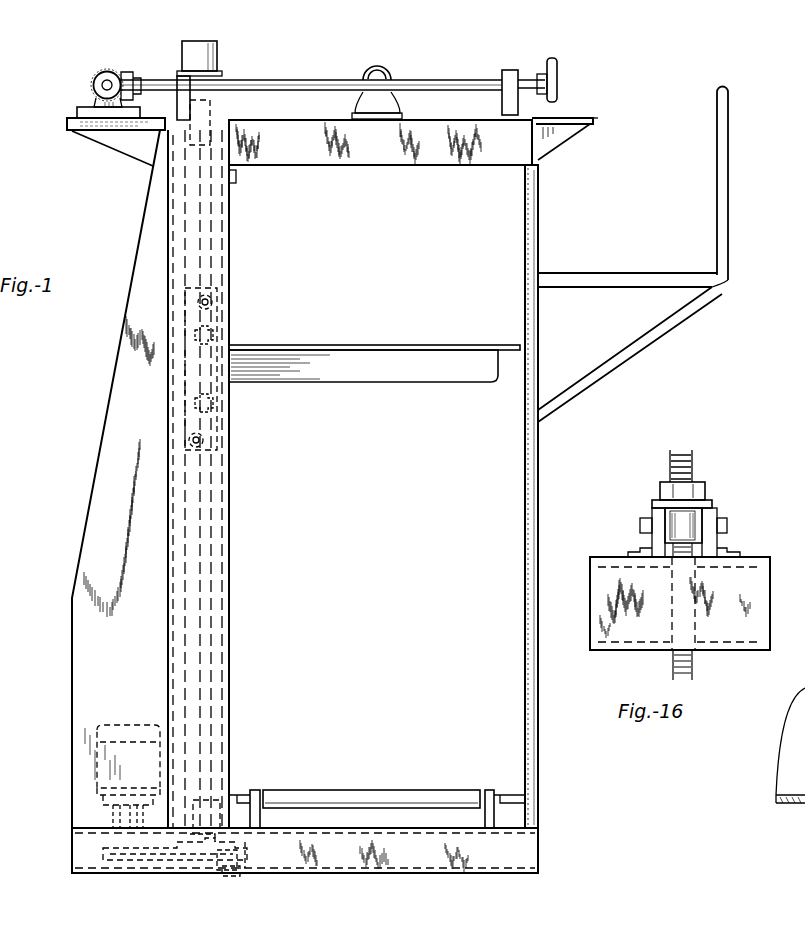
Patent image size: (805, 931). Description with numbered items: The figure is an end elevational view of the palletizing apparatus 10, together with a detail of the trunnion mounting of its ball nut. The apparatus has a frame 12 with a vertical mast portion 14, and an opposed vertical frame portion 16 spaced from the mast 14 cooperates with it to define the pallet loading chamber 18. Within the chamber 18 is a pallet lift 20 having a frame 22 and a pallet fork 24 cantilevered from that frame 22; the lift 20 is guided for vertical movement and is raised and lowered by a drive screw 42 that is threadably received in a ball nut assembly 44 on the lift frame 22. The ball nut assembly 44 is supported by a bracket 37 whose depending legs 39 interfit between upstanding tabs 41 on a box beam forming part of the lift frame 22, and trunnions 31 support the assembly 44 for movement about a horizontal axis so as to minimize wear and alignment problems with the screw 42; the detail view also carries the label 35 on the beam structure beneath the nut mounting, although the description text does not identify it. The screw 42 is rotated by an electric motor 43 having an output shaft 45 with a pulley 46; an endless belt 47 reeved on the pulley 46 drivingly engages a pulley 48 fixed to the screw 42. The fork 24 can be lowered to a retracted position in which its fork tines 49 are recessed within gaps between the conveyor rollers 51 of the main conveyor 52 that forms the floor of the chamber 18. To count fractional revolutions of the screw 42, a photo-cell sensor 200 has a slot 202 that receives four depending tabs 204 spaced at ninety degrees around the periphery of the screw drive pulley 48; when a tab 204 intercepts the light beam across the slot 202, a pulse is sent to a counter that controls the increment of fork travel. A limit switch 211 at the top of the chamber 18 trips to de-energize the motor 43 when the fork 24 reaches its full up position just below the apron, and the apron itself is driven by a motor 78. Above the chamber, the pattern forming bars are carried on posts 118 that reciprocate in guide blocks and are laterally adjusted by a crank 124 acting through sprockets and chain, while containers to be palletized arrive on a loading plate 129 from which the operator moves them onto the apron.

In FIG. 1, the palletizing apparatus 10 is at (104, 194).
In FIG. 1, the frame 12 is at (542, 745).
In FIG. 1, the vertical mast portion 14 is at (105, 493).
In FIG. 1, the opposed vertical frame portion 16 is at (540, 321).
In FIG. 1, the pallet loading chamber 18 is at (522, 724).
In FIG. 1, the pallet lift 20 is at (250, 316).
In FIG. 1, the pallet lift frame 22 is at (240, 388).
In FIG. 1, the pallet fork 24 is at (328, 360).
In FIG. 16, the trunnions 31 is at (640, 526).
In FIG. 16, the housing block 35 is at (755, 577).
In FIG. 16, the bracket 37 is at (652, 503).
In FIG. 16, the depending legs 39 is at (652, 515).
In FIG. 16, the upstanding tabs 41 is at (722, 542).
In FIG. 1, the drive screw 42 is at (212, 518).
In FIG. 16, the drive screw 42 is at (672, 661).
In FIG. 1, the electric motor 43 is at (118, 725).
In FIG. 16, the ball nut assembly 44 is at (700, 485).
In FIG. 1, the output shaft 45 is at (110, 818).
In FIG. 1, the pulley 46 is at (130, 862).
In FIG. 1, the endless belt 47 is at (163, 863).
In FIG. 1, the screw drive pulley 48 is at (262, 826).
In FIG. 1, the fork tines 49 is at (448, 346).
In FIG. 1, the conveyor rollers 51 is at (404, 795).
In FIG. 1, the main conveyor 52 is at (490, 792).
In FIG. 1, the motor 78 is at (392, 68).
In FIG. 1, the posts 118 is at (652, 280).
In FIG. 1, the crank 124 is at (560, 70).
In FIG. 1, the loading plate 129 is at (578, 120).
In FIG. 1, the photo-cell sensor 200 is at (225, 876).
In FIG. 1, the slot 202 is at (238, 862).
In FIG. 1, the depending tabs 204 is at (250, 842).
In FIG. 1, the limit switch 211 is at (236, 180).